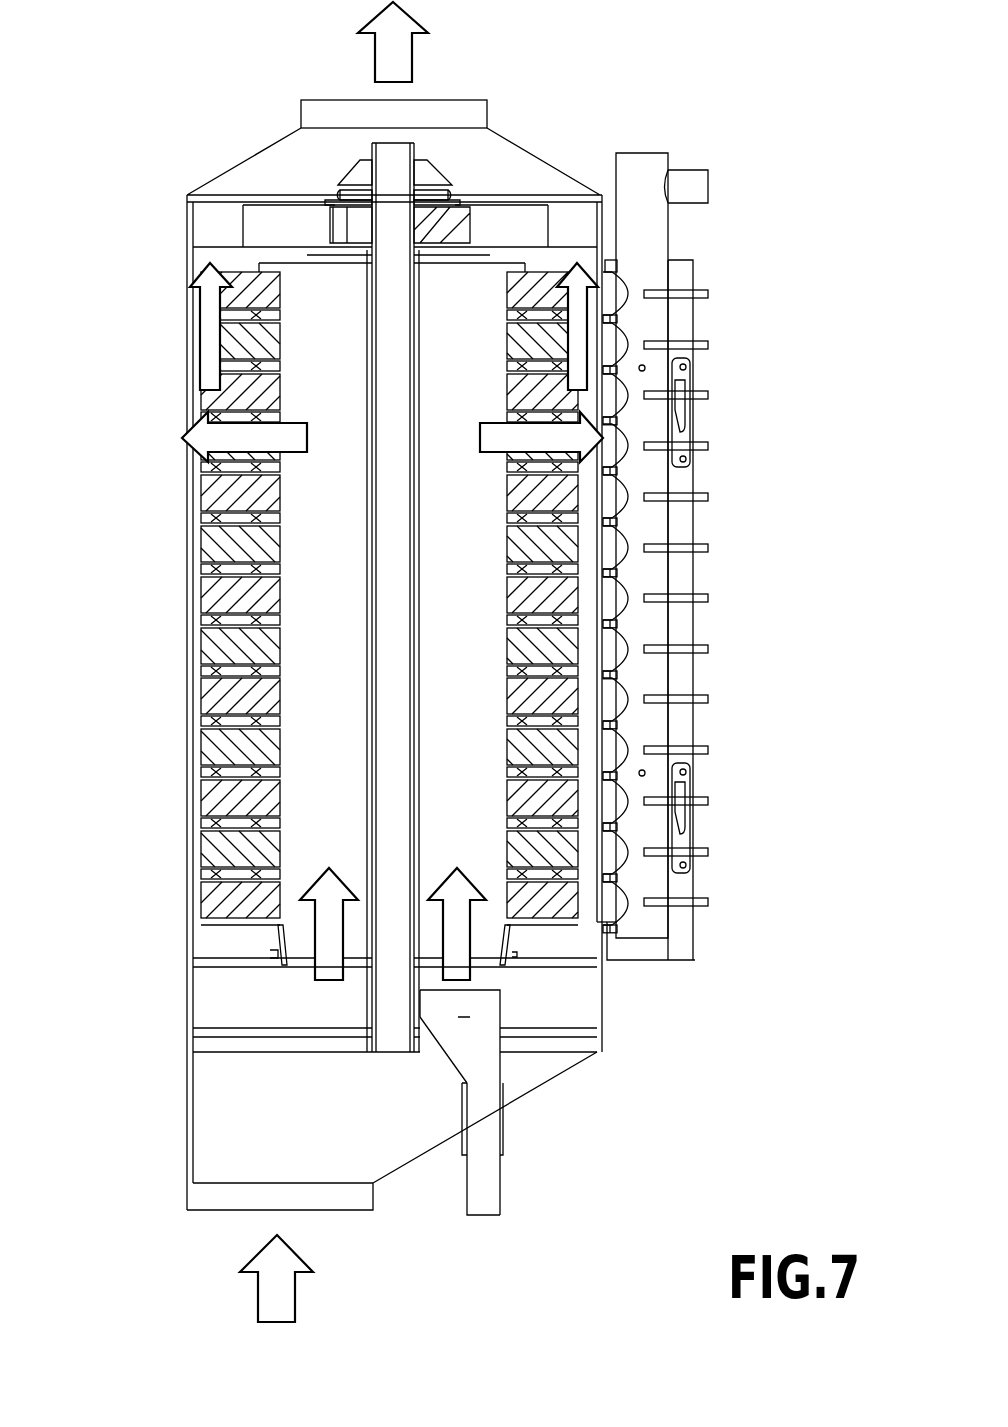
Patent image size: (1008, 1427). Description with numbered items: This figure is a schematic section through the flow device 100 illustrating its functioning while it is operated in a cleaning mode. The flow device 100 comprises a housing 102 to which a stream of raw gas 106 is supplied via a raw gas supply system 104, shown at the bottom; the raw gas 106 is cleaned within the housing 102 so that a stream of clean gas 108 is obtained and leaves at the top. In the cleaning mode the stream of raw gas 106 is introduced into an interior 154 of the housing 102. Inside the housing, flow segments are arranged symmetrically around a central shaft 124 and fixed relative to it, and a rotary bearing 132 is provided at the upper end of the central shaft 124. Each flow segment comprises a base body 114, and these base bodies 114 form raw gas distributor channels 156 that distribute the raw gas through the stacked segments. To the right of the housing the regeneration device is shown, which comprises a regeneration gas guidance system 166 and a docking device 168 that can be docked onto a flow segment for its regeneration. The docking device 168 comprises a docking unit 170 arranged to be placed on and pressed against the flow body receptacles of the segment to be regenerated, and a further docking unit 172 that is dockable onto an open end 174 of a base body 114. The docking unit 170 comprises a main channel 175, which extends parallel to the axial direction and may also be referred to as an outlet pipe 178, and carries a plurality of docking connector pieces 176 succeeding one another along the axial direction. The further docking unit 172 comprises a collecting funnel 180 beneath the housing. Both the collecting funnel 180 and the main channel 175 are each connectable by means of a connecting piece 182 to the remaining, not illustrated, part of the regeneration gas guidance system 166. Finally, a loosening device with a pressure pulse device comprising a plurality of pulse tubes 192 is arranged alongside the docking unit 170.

The flow device 100 is at (205, 132).
The housing 102 is at (187, 492).
The raw gas supply system 104 is at (253, 1152).
The stream of raw gas 106 is at (282, 1302).
The stream of clean gas 108 is at (405, 58).
The base body 114 is at (335, 607).
The central shaft 124 is at (403, 153).
The rotary bearing 132 is at (342, 168).
The interior 154 is at (222, 1013).
The raw gas distributor channels 156 is at (335, 712).
The regeneration gas guidance system 166 is at (488, 1093).
The docking device 168 is at (703, 943).
The docking unit 170 is at (653, 634).
The further docking unit 172 is at (485, 1063).
The open end 174 is at (300, 967).
The main channel 175 is at (659, 530).
The docking connector pieces 176 is at (615, 857).
The outlet pipe 178 is at (648, 677).
The collecting funnel 180 is at (455, 1043).
The connecting piece 182 is at (692, 187).
The pulse tubes 192 is at (705, 493).